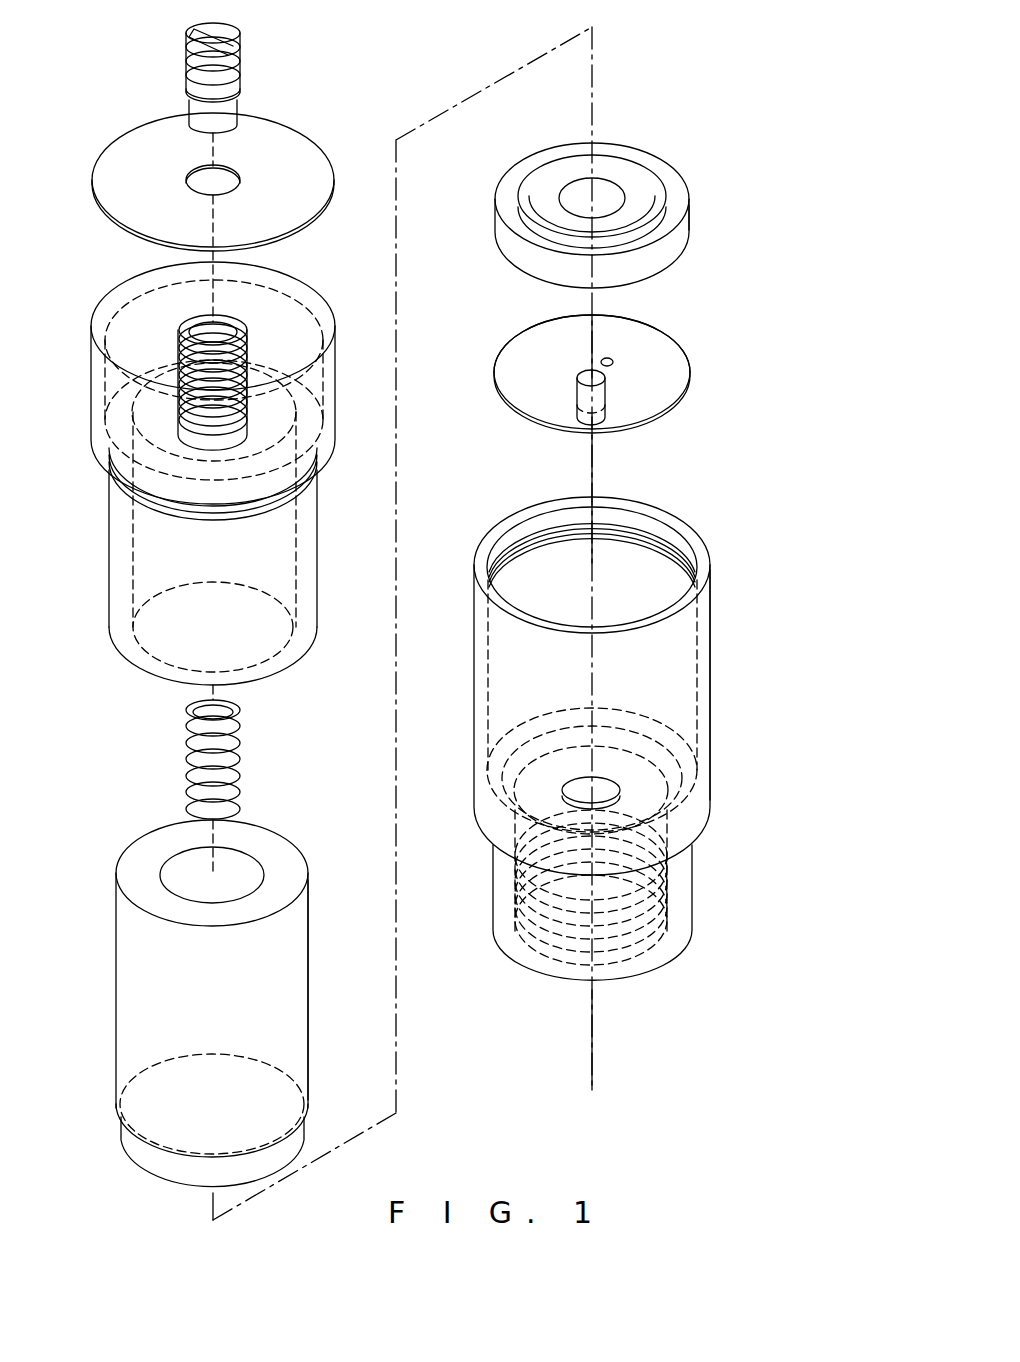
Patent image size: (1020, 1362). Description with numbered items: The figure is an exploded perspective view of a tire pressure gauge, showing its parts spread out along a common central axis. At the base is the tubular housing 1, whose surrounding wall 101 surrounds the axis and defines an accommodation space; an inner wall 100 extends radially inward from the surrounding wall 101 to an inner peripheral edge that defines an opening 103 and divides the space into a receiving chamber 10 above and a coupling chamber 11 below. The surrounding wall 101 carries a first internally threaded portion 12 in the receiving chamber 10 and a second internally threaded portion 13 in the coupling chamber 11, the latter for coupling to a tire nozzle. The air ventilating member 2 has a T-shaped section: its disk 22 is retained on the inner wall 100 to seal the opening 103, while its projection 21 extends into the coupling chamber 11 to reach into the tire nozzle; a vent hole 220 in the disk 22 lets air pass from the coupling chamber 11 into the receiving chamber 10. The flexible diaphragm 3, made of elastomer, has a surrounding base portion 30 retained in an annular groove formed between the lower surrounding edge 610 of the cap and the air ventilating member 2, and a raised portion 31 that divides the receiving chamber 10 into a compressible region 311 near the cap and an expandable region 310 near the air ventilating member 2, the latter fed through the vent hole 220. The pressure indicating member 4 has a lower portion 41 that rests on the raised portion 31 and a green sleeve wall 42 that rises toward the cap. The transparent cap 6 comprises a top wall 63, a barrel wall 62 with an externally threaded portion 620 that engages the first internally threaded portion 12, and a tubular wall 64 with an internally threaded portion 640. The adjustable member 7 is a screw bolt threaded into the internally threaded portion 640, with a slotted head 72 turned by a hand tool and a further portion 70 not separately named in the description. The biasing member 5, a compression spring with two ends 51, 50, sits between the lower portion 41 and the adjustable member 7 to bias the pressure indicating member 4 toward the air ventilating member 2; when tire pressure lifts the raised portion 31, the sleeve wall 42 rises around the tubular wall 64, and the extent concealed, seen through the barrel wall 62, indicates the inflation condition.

The tubular housing 1 is at (712, 738).
The receiving chamber 10 is at (662, 680).
The inner wall 100 is at (683, 768).
The surrounding wall 101 is at (710, 688).
The opening 103 is at (592, 790).
The coupling chamber 11 is at (683, 947).
The first internally threaded portion 12 is at (668, 555).
The second internally threaded portion 13 is at (605, 948).
The air ventilating member 2 is at (640, 397).
The projection 21 is at (607, 400).
The disk 22 is at (670, 385).
The vent hole 220 is at (612, 360).
The flexible diaphragm 3 is at (697, 170).
The surrounding base portion 30 is at (673, 217).
The raised portion 31 is at (607, 153).
The expandable region 310 is at (622, 197).
The compressible region 311 is at (647, 203).
The pressure indicating member 4 is at (308, 937).
The lower portion 41 is at (160, 1167).
The sleeve wall 42 is at (290, 960).
The biasing member 5 is at (240, 765).
The end of biasing member 50 is at (192, 806).
The end of biasing member 51 is at (235, 706).
The cap 6 is at (330, 308).
The lower surrounding edge 610 is at (293, 650).
The barrel wall 62 is at (318, 592).
The externally threaded portion 620 is at (263, 505).
The top wall 63 is at (295, 285).
The tubular wall 64 is at (290, 412).
The internally threaded portion 640 is at (190, 322).
The adjustable member 7 is at (240, 70).
The screw shank 70 is at (233, 100).
The slotted head 72 is at (237, 42).